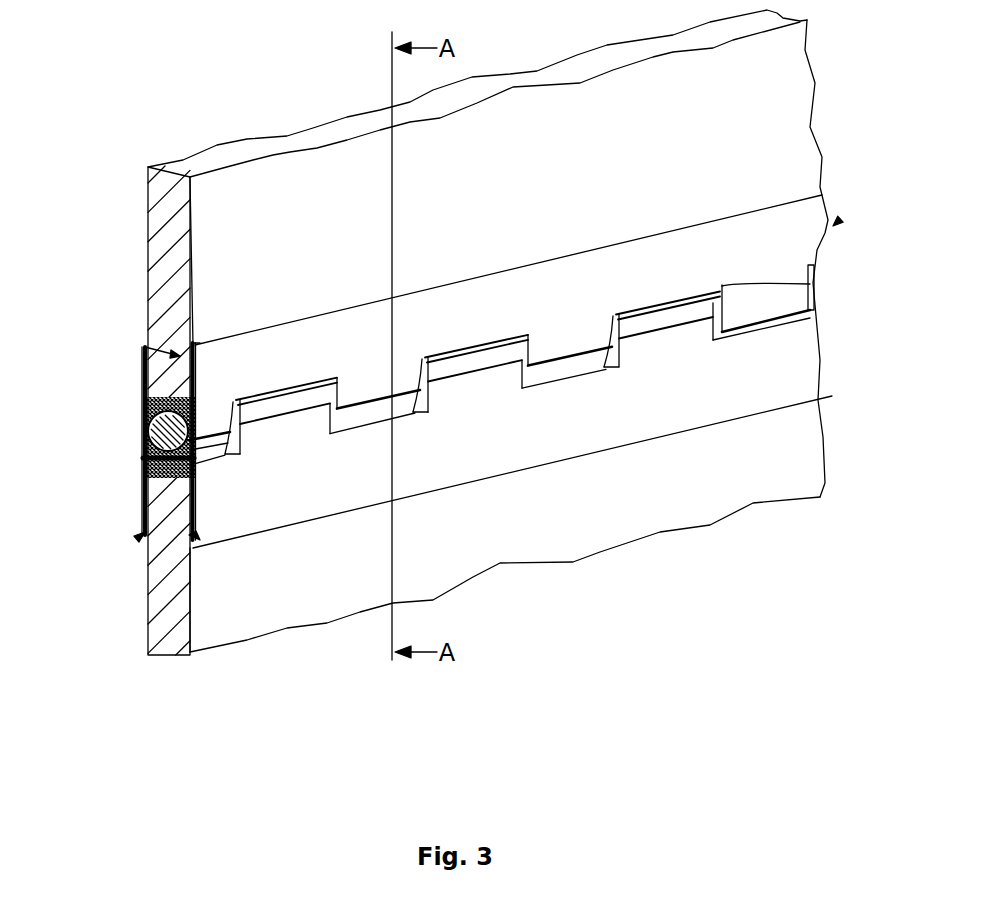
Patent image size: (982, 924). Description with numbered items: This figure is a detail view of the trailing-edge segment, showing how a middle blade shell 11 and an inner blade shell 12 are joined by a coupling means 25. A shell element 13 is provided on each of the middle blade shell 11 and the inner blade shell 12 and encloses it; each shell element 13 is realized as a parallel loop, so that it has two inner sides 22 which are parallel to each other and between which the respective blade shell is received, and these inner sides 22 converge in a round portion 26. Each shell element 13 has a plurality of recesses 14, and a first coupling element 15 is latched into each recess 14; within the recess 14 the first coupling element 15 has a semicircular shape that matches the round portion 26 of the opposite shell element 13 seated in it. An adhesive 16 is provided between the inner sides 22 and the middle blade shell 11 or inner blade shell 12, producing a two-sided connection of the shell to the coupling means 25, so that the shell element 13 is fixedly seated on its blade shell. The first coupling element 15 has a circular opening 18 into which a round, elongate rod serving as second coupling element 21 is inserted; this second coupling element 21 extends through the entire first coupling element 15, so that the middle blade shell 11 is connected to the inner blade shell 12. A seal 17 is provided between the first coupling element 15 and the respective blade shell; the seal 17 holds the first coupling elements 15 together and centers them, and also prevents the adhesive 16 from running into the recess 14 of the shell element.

The middle blade shell 11 is at (247, 628).
The inner blade shell 12 is at (313, 160).
The shell element 13 is at (768, 218).
The recess 14 is at (340, 403).
The first coupling element 15 is at (305, 397).
The adhesive 16 is at (140, 378).
The seal 17 is at (145, 410).
The circular opening 18 is at (190, 470).
The second coupling element 21 is at (145, 447).
The inner sides 22 is at (145, 348).
The coupling means 25 is at (838, 222).
The round portion 26 is at (787, 313).